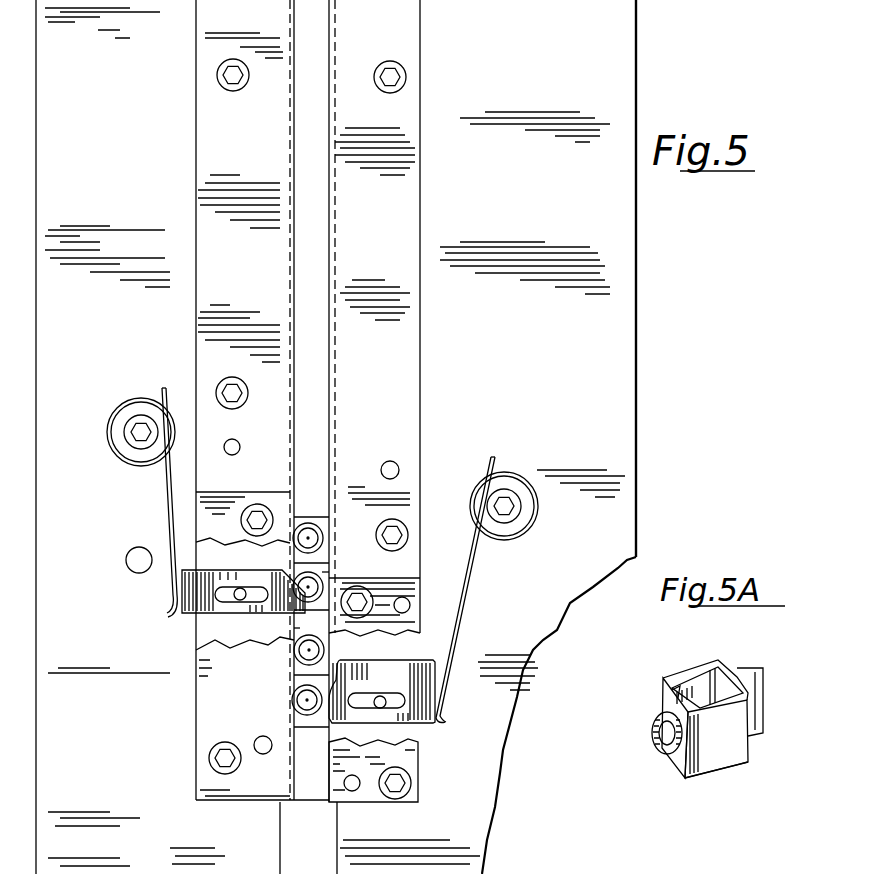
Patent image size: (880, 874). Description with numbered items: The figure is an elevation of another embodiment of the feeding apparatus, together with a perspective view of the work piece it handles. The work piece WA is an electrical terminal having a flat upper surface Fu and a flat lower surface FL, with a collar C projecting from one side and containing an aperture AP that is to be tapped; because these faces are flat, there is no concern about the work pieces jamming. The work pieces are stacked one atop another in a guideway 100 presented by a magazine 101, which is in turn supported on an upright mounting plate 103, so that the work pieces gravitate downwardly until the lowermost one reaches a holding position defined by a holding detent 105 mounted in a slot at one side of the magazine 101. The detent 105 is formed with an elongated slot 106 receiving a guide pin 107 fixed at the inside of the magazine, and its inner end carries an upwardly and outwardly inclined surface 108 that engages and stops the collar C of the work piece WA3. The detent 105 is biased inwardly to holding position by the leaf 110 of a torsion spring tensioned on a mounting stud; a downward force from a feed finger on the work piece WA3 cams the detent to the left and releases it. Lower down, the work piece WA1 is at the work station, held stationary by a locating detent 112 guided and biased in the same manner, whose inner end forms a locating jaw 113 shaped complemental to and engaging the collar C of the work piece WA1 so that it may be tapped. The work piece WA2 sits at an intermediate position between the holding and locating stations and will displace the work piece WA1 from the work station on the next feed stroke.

In FIG. 5, the guideway 100 is at (315, 371).
In FIG. 5, the magazine 101 is at (422, 166).
In FIG. 5, the upright mounting plate 103 is at (557, 66).
In FIG. 5, the holding detent 105 is at (186, 617).
In FIG. 5, the elongated slot 106 is at (262, 589).
In FIG. 5, the guide pin 107 is at (240, 589).
In FIG. 5, the inclined surface 108 is at (285, 580).
In FIG. 5, the leaf of torsion spring 110 is at (170, 490).
In FIG. 5, the locating detent 112 is at (413, 729).
In FIG. 5, the locating jaw 113 is at (337, 728).
In FIG. 5, the work piece WA is at (297, 516).
In FIG. 5A, the work piece WA is at (677, 670).
In FIG. 5, the work piece at work station WA1 is at (293, 703).
In FIG. 5, the work piece at intermediate position WA2 is at (294, 628).
In FIG. 5, the lowermost work piece at holding position WA3 is at (322, 572).
In FIG. 5, the collar C is at (330, 650).
In FIG. 5A, the collar C is at (667, 751).
In FIG. 5A, the aperture AP is at (653, 737).
In FIG. 5A, the flat upper surface Fu is at (703, 660).
In FIG. 5A, the flat lower surface FL is at (720, 770).